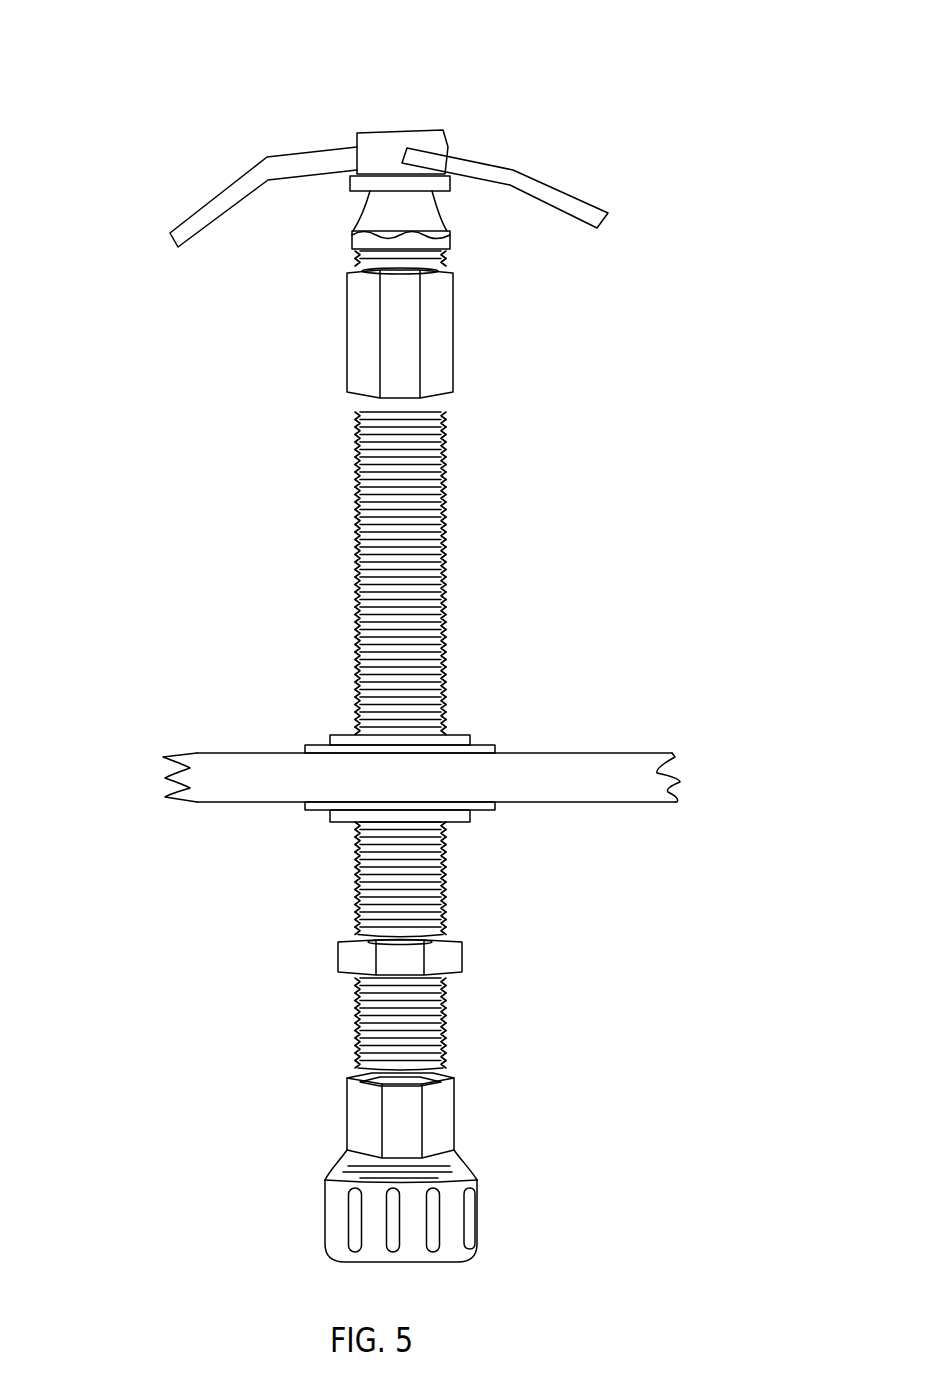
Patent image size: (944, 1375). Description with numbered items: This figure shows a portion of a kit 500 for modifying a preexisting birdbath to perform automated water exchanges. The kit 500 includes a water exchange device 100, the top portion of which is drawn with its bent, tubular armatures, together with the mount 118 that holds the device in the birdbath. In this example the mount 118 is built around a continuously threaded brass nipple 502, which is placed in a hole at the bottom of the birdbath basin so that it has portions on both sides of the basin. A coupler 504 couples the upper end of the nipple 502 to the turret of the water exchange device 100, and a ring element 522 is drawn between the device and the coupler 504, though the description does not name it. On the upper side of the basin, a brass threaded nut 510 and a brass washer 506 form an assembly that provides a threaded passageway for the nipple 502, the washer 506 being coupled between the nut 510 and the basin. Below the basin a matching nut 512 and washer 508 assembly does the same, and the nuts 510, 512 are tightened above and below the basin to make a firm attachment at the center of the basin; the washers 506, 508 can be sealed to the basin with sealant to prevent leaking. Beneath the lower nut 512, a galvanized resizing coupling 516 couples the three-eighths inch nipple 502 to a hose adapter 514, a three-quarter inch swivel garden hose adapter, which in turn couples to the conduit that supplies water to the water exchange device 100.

The water exchange device 100 is at (131, 63).
The kit 500 is at (620, 108).
The mount 118 is at (185, 540).
The threaded nut 510 is at (357, 133).
The sealing ring 522 is at (443, 258).
The coupler 504 is at (440, 358).
The continuously threaded nipple 502 is at (427, 535).
The washer 506 is at (490, 750).
The washer 508 is at (490, 807).
The threaded nut 512 is at (457, 818).
The resizing coupling 516 is at (430, 1022).
The hose adapter 514 is at (467, 1180).